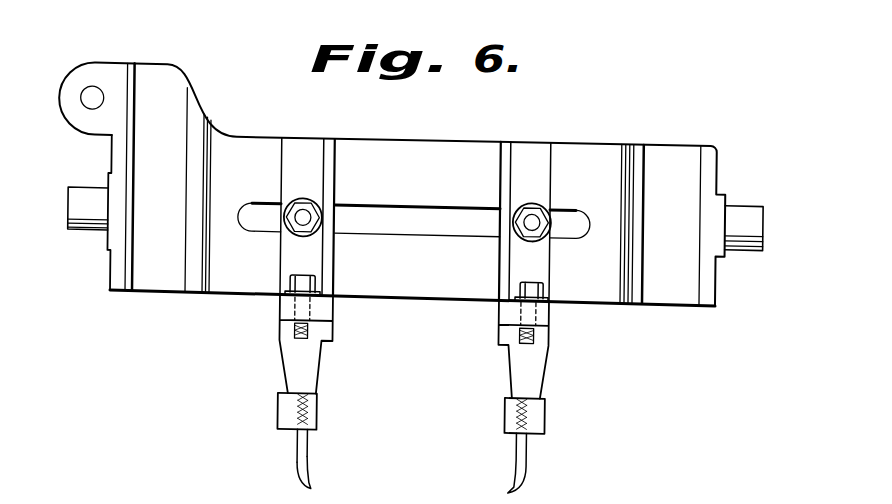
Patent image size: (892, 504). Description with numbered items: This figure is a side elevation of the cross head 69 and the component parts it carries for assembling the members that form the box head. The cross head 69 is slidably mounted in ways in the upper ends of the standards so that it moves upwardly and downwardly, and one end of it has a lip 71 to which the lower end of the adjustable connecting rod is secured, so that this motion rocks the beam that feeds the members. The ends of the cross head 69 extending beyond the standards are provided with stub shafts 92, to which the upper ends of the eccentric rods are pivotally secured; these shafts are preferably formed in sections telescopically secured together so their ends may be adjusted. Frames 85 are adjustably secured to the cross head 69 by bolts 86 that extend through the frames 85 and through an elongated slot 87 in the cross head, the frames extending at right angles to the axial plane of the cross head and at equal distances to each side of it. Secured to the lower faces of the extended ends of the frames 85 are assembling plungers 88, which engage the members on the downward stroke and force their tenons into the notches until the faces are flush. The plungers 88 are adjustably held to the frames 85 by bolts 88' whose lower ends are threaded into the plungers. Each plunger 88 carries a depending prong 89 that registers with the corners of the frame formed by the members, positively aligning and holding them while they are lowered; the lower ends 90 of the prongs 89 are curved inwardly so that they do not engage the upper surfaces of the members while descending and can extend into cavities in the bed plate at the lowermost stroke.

The cross head 69 is at (428, 155).
The lip 71 is at (89, 66).
The stub shafts 92 is at (73, 193).
The elongated slot 87 is at (432, 228).
The frames 85 is at (293, 267).
The bolts 86 is at (293, 206).
The assembling plungers 88 is at (371, 403).
The bolts 88' is at (416, 310).
The depending prong 89 is at (295, 458).
The lower ends 90 is at (310, 488).